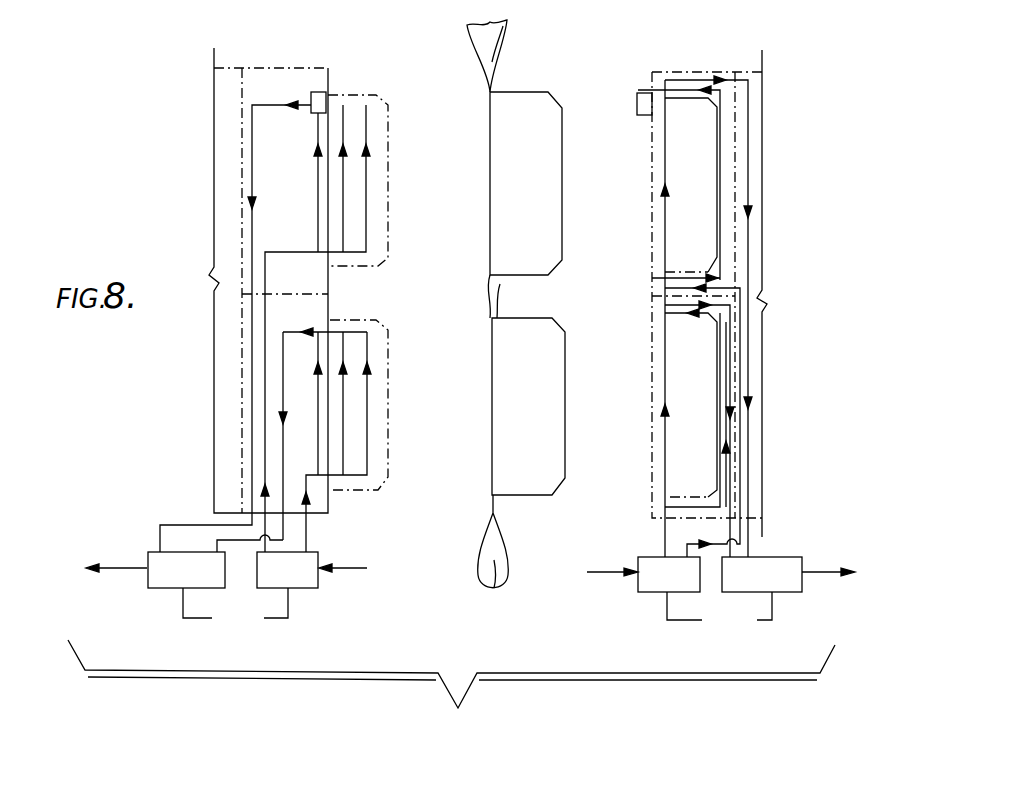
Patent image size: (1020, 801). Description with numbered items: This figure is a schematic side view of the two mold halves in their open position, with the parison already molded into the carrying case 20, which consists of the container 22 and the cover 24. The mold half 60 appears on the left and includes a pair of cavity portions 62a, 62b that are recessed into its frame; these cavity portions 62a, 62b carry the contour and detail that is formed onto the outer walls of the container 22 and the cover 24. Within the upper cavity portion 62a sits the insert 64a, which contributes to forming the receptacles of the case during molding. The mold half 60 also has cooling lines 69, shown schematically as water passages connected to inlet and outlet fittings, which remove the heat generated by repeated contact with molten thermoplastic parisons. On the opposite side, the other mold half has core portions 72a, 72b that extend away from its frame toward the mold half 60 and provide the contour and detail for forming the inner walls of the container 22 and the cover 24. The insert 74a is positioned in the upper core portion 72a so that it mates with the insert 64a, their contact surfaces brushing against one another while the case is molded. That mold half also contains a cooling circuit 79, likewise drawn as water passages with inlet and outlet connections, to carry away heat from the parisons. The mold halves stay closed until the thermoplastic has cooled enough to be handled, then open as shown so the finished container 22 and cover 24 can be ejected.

The carrying case 20 is at (539, 304).
The container 22 is at (552, 165).
The cover 24 is at (555, 397).
The mold half 60 is at (178, 220).
The upper cavity portion 62a is at (335, 218).
The cavity portion 62b is at (355, 438).
The insert 64a is at (311, 95).
The cooling lines 69 is at (283, 457).
The upper core portion 72a is at (702, 242).
The core portion 72b is at (693, 375).
The insert 74a is at (645, 93).
The cooling circuit 79 is at (747, 148).